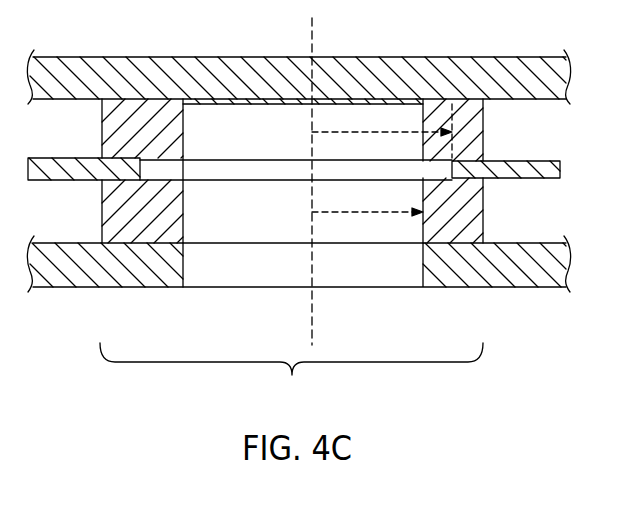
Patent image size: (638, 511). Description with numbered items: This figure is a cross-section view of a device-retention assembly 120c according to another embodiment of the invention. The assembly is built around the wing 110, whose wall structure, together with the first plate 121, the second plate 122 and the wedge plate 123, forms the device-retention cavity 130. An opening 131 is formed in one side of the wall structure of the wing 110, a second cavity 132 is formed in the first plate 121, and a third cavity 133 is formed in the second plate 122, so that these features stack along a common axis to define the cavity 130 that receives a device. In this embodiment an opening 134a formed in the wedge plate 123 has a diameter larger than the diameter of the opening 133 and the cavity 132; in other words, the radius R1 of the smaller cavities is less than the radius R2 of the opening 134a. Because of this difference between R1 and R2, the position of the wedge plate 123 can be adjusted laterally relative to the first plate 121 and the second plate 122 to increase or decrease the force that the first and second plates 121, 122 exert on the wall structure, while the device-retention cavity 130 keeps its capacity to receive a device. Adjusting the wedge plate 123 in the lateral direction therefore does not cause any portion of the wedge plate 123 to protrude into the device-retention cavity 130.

The wing 110 is at (458, 57).
The first plate 121 is at (476, 140).
The second plate 122 is at (476, 222).
The wedge plate 123 is at (477, 172).
The opening 131 is at (248, 275).
The second cavity 132 is at (215, 134).
The third cavity 133 is at (205, 214).
The opening 134a is at (278, 165).
The device-retention cavity 130 is at (323, 289).
The device-retention assembly 120c is at (291, 374).
The radius R1 is at (367, 203).
The radius R2 is at (382, 123).